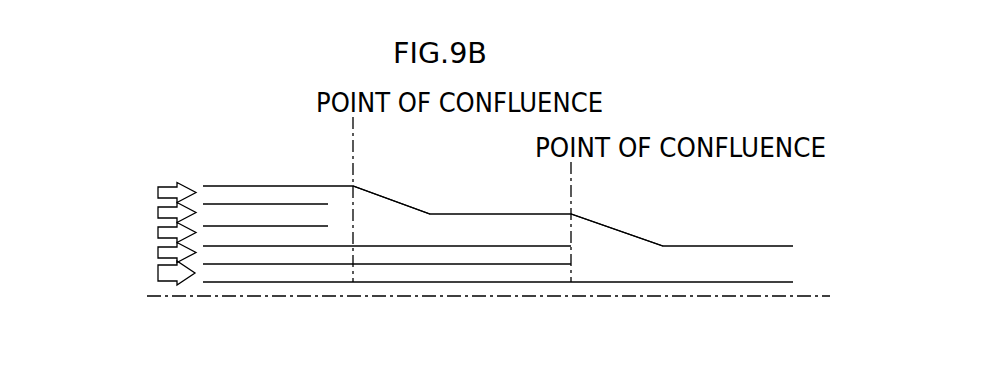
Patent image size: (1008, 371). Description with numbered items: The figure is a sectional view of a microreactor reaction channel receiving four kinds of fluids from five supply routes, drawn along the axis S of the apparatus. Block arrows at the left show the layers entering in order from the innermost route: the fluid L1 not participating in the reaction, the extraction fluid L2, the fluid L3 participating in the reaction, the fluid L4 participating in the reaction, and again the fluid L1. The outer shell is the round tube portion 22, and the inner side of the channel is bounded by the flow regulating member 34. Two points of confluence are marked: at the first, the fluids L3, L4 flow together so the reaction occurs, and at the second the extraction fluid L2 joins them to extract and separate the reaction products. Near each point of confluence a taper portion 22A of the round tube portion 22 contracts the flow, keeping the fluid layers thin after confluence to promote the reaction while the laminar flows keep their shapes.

The round tube portion 22 is at (279, 187).
The taper portion 22A is at (397, 202).
The flow regulating member 34 is at (648, 283).
The axis S is at (501, 295).
The fluid not participating in the reaction L1 is at (161, 189).
The extraction fluid L2 is at (157, 255).
The fluid participating in the reaction L3 is at (158, 233).
The fluid participating in the reaction L4 is at (158, 215).